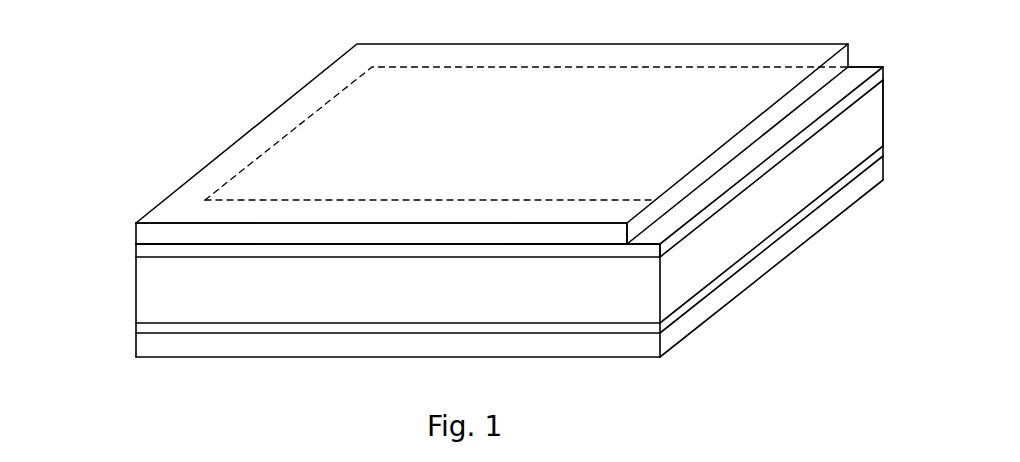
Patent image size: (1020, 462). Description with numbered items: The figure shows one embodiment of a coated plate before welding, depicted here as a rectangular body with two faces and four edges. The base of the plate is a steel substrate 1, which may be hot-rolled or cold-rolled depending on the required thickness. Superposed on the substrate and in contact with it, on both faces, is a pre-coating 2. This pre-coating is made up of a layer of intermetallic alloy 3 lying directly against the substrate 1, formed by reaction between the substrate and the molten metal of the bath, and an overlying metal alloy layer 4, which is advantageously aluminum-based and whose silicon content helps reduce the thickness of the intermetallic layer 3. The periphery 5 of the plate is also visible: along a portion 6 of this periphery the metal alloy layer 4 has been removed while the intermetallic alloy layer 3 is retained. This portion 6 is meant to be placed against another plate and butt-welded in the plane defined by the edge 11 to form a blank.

The steel substrate 1 is at (180, 313).
The pre-coating 2 is at (68, 168).
The layer of intermetallic alloy 3 is at (157, 252).
The metal alloy layer 4 is at (173, 228).
The periphery 5 is at (300, 103).
The portion of the periphery 6 is at (848, 80).
The edge 11 is at (870, 125).